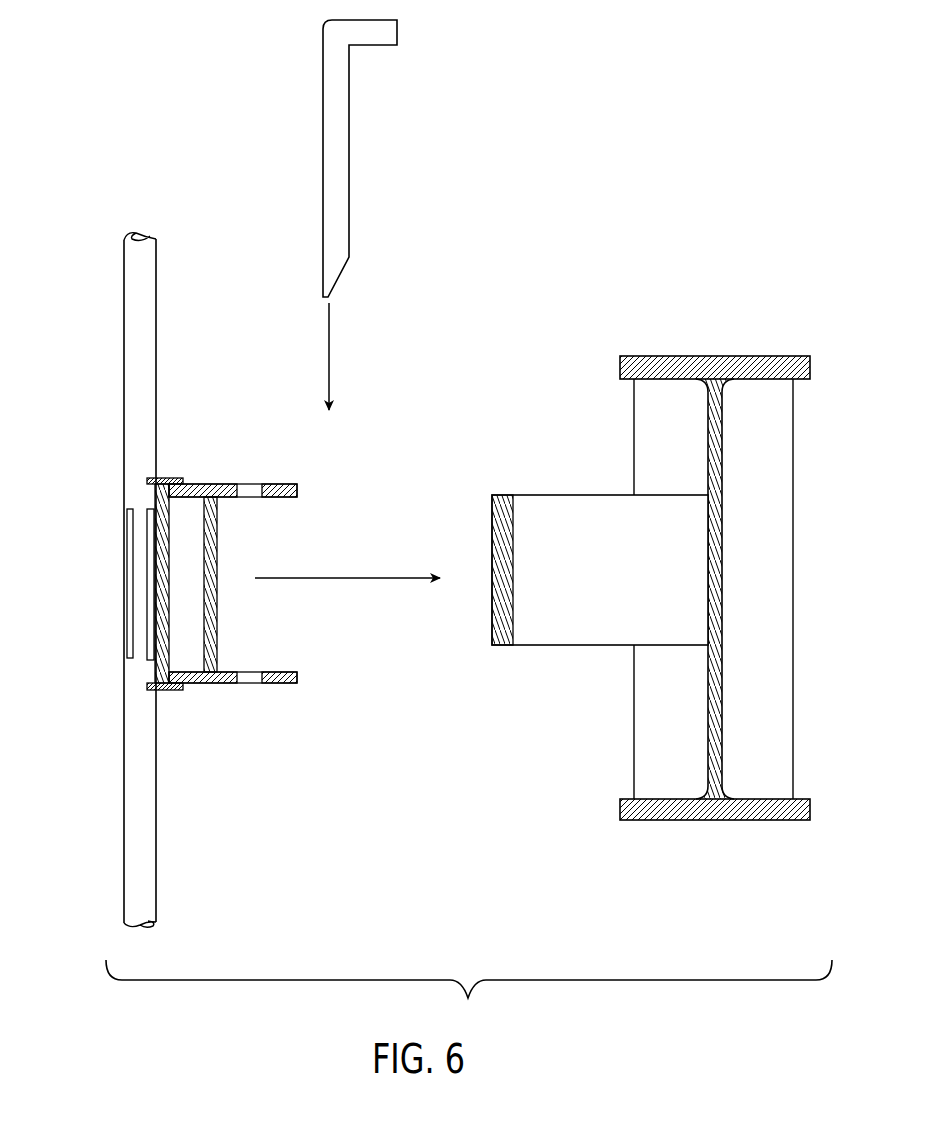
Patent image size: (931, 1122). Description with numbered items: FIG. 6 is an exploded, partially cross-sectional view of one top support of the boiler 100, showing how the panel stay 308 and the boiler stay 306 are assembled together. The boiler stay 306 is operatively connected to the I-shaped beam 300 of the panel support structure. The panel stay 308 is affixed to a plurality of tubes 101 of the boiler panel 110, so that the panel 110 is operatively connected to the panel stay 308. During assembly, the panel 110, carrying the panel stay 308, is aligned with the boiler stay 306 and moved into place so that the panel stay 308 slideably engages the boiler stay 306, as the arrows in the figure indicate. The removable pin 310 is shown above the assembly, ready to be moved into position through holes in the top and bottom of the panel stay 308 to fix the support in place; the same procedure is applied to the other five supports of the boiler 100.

The boiler 100 is at (587, 57).
The tubes 101 is at (123, 354).
The panel 110 is at (100, 421).
The beam 300 is at (765, 359).
The boiler stay 306 is at (546, 473).
The panel stay 308 is at (211, 467).
The pin 310 is at (337, 168).